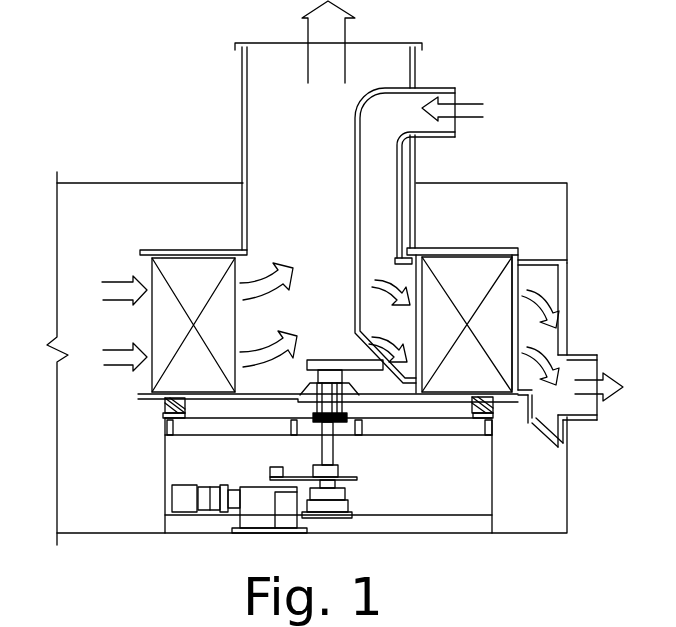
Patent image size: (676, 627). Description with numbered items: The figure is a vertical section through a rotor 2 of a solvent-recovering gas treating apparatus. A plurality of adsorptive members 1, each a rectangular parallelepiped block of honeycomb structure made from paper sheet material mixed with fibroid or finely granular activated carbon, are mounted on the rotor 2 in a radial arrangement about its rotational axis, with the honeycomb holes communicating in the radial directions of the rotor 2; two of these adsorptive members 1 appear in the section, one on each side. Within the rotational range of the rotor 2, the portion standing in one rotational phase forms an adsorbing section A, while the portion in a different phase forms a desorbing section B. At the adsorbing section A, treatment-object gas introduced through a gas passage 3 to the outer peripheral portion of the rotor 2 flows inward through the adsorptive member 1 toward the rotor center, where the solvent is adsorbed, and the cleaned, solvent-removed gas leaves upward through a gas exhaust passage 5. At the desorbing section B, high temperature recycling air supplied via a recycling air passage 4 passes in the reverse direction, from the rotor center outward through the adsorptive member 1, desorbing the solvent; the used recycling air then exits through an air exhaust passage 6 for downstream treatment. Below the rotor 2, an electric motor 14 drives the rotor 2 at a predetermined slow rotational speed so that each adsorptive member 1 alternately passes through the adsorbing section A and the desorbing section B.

The adsorptive member 1 is at (167, 267).
The rotor 2 is at (184, 248).
The gas passage 3 is at (118, 350).
The recycling air passage 4 is at (466, 101).
The gas exhaust passage 5 is at (277, 112).
The air exhaust passage 6 is at (561, 394).
The electric motor 14 is at (183, 485).
The adsorbing section A is at (148, 377).
The desorbing section B is at (514, 337).